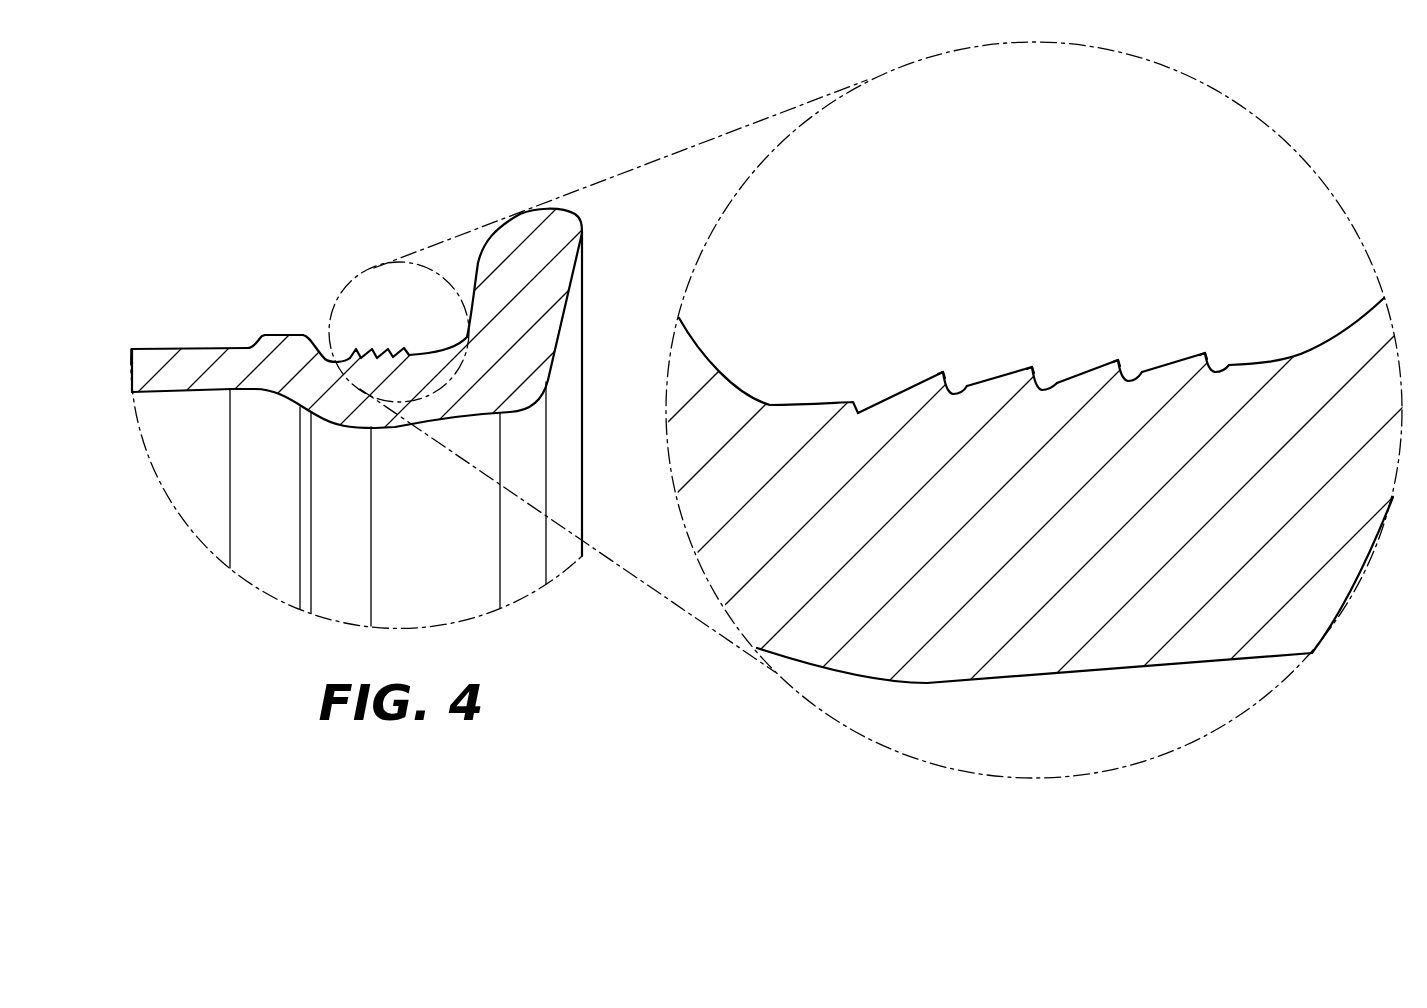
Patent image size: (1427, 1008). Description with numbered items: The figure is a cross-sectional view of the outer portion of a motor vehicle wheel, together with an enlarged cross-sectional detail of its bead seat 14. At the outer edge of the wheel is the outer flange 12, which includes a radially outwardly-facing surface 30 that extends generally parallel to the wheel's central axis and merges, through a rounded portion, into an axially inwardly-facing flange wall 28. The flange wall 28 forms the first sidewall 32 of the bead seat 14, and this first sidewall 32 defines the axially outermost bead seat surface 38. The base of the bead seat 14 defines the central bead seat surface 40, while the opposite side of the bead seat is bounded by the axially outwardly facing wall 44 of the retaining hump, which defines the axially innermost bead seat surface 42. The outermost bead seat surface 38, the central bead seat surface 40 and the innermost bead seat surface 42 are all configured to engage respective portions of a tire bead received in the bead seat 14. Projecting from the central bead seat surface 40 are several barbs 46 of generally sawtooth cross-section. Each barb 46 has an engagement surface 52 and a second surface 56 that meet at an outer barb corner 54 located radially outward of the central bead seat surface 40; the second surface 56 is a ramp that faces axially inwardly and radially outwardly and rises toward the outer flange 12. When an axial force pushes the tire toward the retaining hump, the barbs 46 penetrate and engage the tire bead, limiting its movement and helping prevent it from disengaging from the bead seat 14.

The outer flange 12 is at (497, 225).
The bead seat 14 is at (356, 303).
The flange wall 28 is at (490, 237).
The radially outwardly-facing surface 30 is at (550, 207).
The first sidewall 32 is at (472, 283).
The outermost bead seat surface 38 is at (463, 335).
The central bead seat surface 40 is at (380, 313).
The innermost bead seat surface 42 is at (307, 347).
The axially outwardly facing wall 44 is at (305, 342).
The barb 46 is at (393, 350).
The engagement surface 52 is at (951, 384).
The outer barb corner 54 is at (946, 375).
The second surface 56 is at (898, 393).